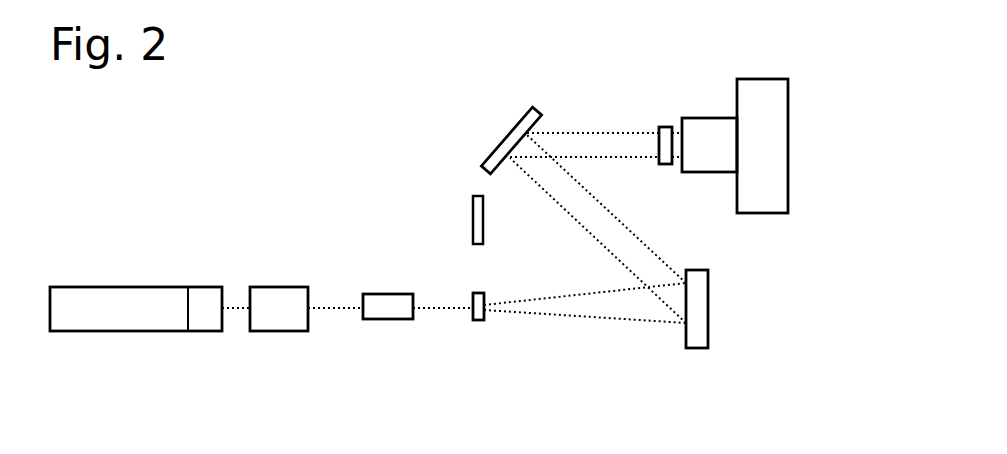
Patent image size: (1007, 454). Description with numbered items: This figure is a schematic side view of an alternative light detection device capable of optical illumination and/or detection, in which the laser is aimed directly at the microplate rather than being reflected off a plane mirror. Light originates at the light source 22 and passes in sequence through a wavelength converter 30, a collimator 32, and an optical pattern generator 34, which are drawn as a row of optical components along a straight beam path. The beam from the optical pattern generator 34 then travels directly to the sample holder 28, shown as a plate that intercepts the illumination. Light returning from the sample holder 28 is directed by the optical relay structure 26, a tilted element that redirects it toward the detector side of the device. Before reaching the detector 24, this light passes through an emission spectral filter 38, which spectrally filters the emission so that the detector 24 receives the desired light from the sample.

The light source 22 is at (128, 331).
The wavelength converter 30 is at (275, 331).
The collimator 32 is at (373, 319).
The optical pattern generator 34 is at (479, 320).
The optical relay structure 26 is at (507, 132).
The sample holder 28 is at (708, 303).
The emission spectral filter 38 is at (665, 125).
The detector 24 is at (788, 150).